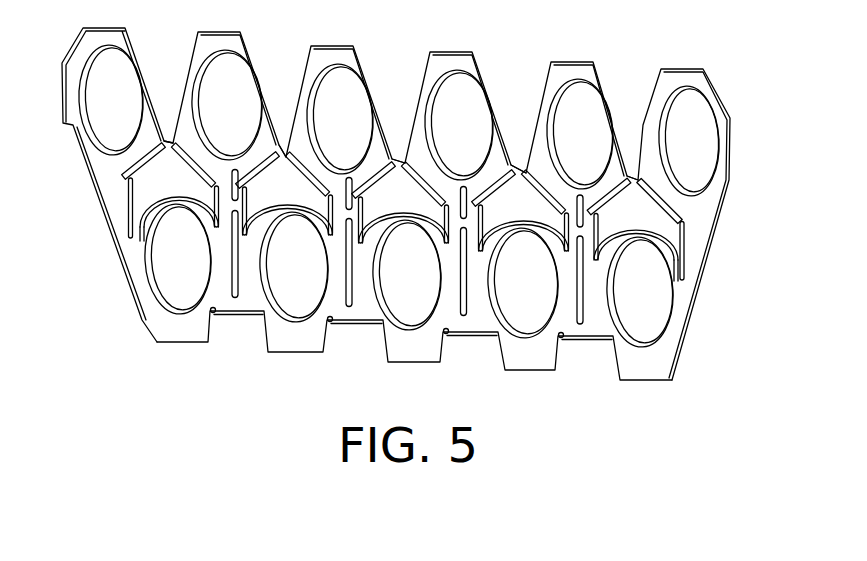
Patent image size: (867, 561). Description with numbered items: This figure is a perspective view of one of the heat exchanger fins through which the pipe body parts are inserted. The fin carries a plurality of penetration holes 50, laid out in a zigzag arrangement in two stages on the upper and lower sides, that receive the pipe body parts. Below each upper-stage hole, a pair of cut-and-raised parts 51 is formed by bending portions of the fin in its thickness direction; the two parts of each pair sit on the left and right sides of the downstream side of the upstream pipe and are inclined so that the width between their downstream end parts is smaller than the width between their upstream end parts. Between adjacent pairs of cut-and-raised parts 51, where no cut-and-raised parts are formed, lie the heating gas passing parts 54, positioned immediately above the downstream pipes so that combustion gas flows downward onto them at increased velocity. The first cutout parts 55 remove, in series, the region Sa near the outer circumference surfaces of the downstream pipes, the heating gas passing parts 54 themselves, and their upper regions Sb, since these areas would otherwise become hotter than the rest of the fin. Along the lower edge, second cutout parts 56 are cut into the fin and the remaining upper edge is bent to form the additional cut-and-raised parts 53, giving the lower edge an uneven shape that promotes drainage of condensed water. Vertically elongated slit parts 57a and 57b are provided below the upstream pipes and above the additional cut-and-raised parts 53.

The penetration holes 50 is at (102, 57).
The cut-and-raised parts 51 is at (255, 163).
The additional cut-and-raised parts 53 is at (340, 321).
The heating gas passing parts 54 is at (167, 143).
The first cutout parts 55 is at (143, 190).
The second cutout parts 56 is at (358, 340).
The slit part 57a is at (238, 192).
The slit part 57b is at (240, 250).
The region Sa is at (523, 207).
The upper region Sb is at (515, 103).